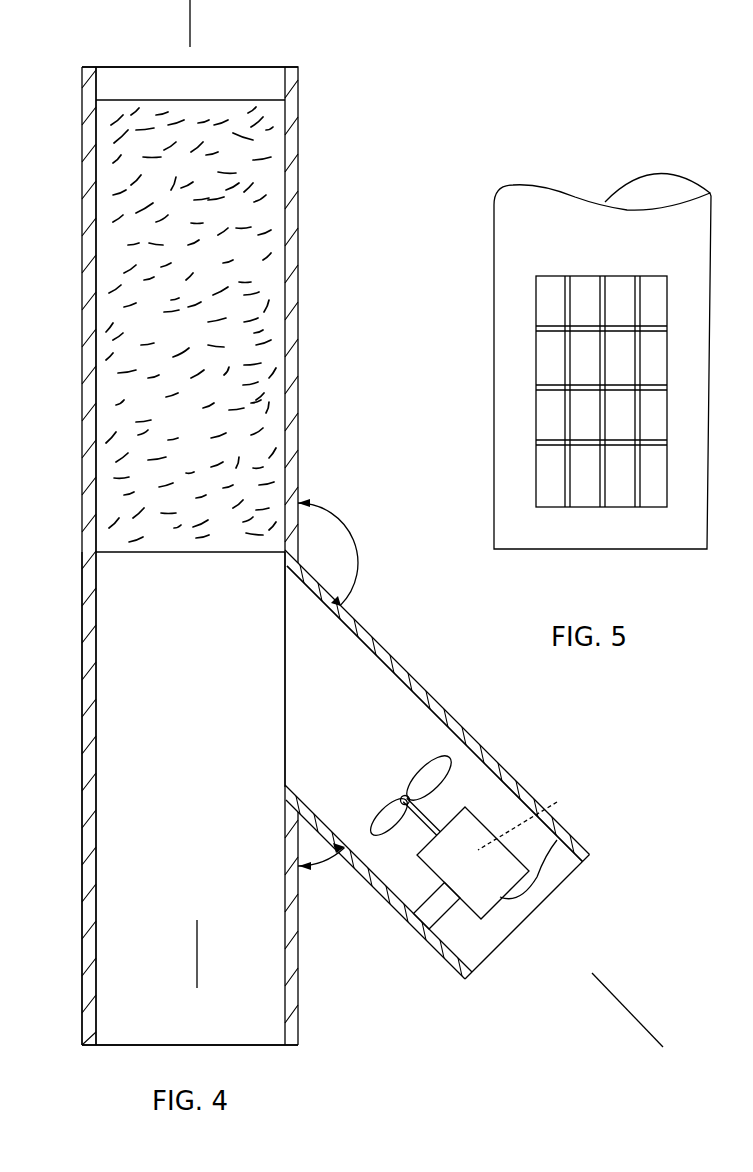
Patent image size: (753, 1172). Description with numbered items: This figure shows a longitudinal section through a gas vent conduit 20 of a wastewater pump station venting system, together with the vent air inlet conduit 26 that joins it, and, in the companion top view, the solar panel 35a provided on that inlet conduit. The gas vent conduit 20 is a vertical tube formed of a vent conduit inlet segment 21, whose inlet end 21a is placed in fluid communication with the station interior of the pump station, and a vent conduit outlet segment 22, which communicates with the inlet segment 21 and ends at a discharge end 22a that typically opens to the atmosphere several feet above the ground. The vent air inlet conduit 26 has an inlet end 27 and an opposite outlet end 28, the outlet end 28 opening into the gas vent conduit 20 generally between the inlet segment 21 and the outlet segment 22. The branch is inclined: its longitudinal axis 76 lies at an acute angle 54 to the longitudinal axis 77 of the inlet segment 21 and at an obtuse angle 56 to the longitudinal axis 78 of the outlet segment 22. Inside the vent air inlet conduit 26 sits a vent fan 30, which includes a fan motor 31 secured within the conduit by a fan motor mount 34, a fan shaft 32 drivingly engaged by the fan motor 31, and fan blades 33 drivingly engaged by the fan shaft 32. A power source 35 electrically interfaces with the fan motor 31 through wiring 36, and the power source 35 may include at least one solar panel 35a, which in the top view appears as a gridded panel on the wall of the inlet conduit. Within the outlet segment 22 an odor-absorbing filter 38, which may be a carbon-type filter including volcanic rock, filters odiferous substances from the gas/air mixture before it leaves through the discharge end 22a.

In FIG. 4, the gas vent conduit 20 is at (305, 371).
In FIG. 4, the vent conduit inlet segment 21 is at (82, 885).
In FIG. 4, the inlet end 21a is at (274, 1048).
In FIG. 4, the vent conduit outlet segment 22 is at (82, 325).
In FIG. 4, the discharge end 22a is at (248, 66).
In FIG. 4, the vent air inlet conduit 26 is at (425, 675).
In FIG. 5, the vent air inlet conduit 26 is at (494, 383).
In FIG. 4, the inlet end 27 is at (570, 880).
In FIG. 4, the outlet end 28 is at (285, 640).
In FIG. 4, the vent fan 30 is at (480, 800).
In FIG. 4, the fan motor 31 is at (533, 820).
In FIG. 4, the fan shaft 32 is at (440, 828).
In FIG. 4, the fan blades 33 is at (425, 762).
In FIG. 4, the fan motor mount 34 is at (440, 925).
In FIG. 4, the power source 35 is at (540, 786).
In FIG. 5, the power source 35 is at (547, 472).
In FIG. 4, the solar panel 35a is at (468, 740).
In FIG. 4, the wiring 36 is at (541, 890).
In FIG. 4, the odor-absorbing filter 38 is at (200, 528).
In FIG. 4, the acute angle 54 is at (330, 870).
In FIG. 4, the obtuse angle 56 is at (360, 548).
In FIG. 4, the longitudinal axis 76 is at (632, 1010).
In FIG. 4, the longitudinal axis 77 is at (197, 950).
In FIG. 4, the longitudinal axis 78 is at (188, 18).